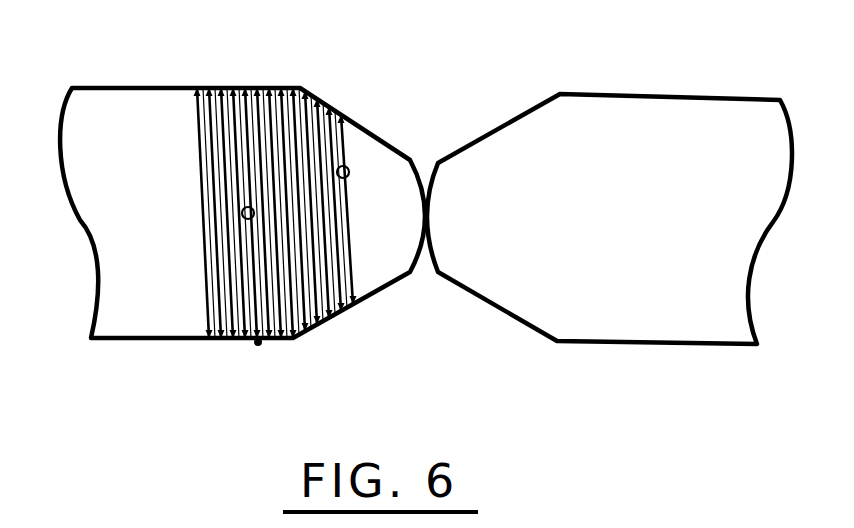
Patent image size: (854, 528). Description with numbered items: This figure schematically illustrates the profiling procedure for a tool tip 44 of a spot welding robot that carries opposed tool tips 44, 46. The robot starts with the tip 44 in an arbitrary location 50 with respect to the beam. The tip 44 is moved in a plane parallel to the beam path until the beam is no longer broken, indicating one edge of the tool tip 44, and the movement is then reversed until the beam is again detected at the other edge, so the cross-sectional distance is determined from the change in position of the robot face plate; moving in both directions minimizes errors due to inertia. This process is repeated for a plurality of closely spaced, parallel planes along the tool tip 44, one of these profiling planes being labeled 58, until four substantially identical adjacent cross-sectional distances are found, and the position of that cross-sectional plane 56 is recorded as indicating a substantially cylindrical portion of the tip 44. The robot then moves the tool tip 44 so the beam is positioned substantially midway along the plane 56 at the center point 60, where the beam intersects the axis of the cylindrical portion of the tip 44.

The tool tip 44 is at (130, 202).
The tool tip 46 is at (676, 262).
The arbitrary location 50 is at (346, 178).
The cross-sectional plane 56 is at (247, 86).
The first weld trace 58 is at (197, 86).
The center point 60 is at (244, 218).